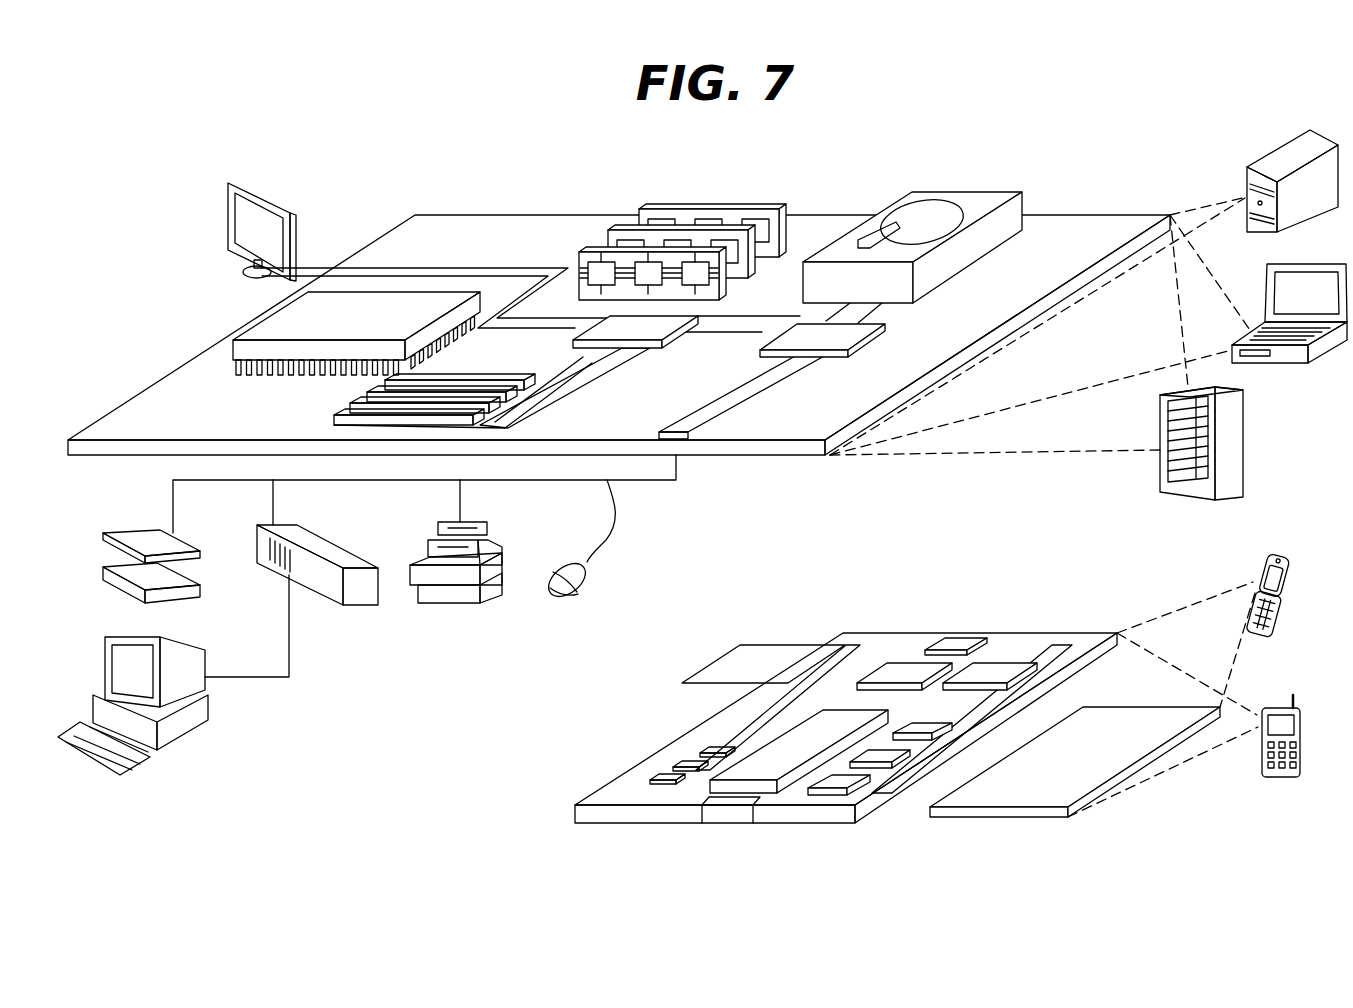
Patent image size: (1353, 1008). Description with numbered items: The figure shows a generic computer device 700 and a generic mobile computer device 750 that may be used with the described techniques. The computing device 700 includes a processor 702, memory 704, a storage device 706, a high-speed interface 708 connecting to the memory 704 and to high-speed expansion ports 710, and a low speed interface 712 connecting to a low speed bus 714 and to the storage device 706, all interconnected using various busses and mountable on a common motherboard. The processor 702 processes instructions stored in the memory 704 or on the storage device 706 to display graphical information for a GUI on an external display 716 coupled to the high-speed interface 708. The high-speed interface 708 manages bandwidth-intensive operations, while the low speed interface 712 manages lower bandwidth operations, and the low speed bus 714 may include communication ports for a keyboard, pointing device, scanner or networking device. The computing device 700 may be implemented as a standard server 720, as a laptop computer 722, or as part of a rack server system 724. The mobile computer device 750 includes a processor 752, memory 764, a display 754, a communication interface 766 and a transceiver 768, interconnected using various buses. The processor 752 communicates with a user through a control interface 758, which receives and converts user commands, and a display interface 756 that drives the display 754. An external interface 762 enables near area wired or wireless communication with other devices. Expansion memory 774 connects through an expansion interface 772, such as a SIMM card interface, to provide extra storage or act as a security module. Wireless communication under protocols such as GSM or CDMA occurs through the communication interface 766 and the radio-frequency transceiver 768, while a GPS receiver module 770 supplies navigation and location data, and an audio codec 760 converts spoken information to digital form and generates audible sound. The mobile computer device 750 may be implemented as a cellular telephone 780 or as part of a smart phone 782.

The computing device 700 is at (370, 160).
The processor 702 is at (262, 327).
The memory 704 is at (721, 208).
The storage device 706 is at (958, 194).
The high-speed interface 708 is at (664, 326).
The high-speed expansion ports 710 is at (361, 403).
The low speed interface 712 is at (793, 338).
The low speed bus 714 is at (677, 430).
The display 716 is at (237, 182).
The standard server 720 is at (1270, 163).
The laptop computer 722 is at (1322, 264).
The rack server system 724 is at (1243, 443).
The mobile computer device 750 is at (533, 833).
The processor 752 is at (770, 760).
The display 754 is at (1115, 725).
The display interface 756 is at (850, 782).
The control interface 758 is at (887, 753).
The audio codec 760 is at (938, 724).
The external interface 762 is at (727, 808).
The memory 764 is at (696, 764).
The communication interface 766 is at (905, 667).
The transceiver 768 is at (995, 667).
The GPS receiver module 770 is at (957, 638).
The expansion interface 772 is at (825, 643).
The expansion memory 774 is at (742, 645).
The cellular telephone 780 is at (1264, 559).
The smart phone 782 is at (1274, 708).